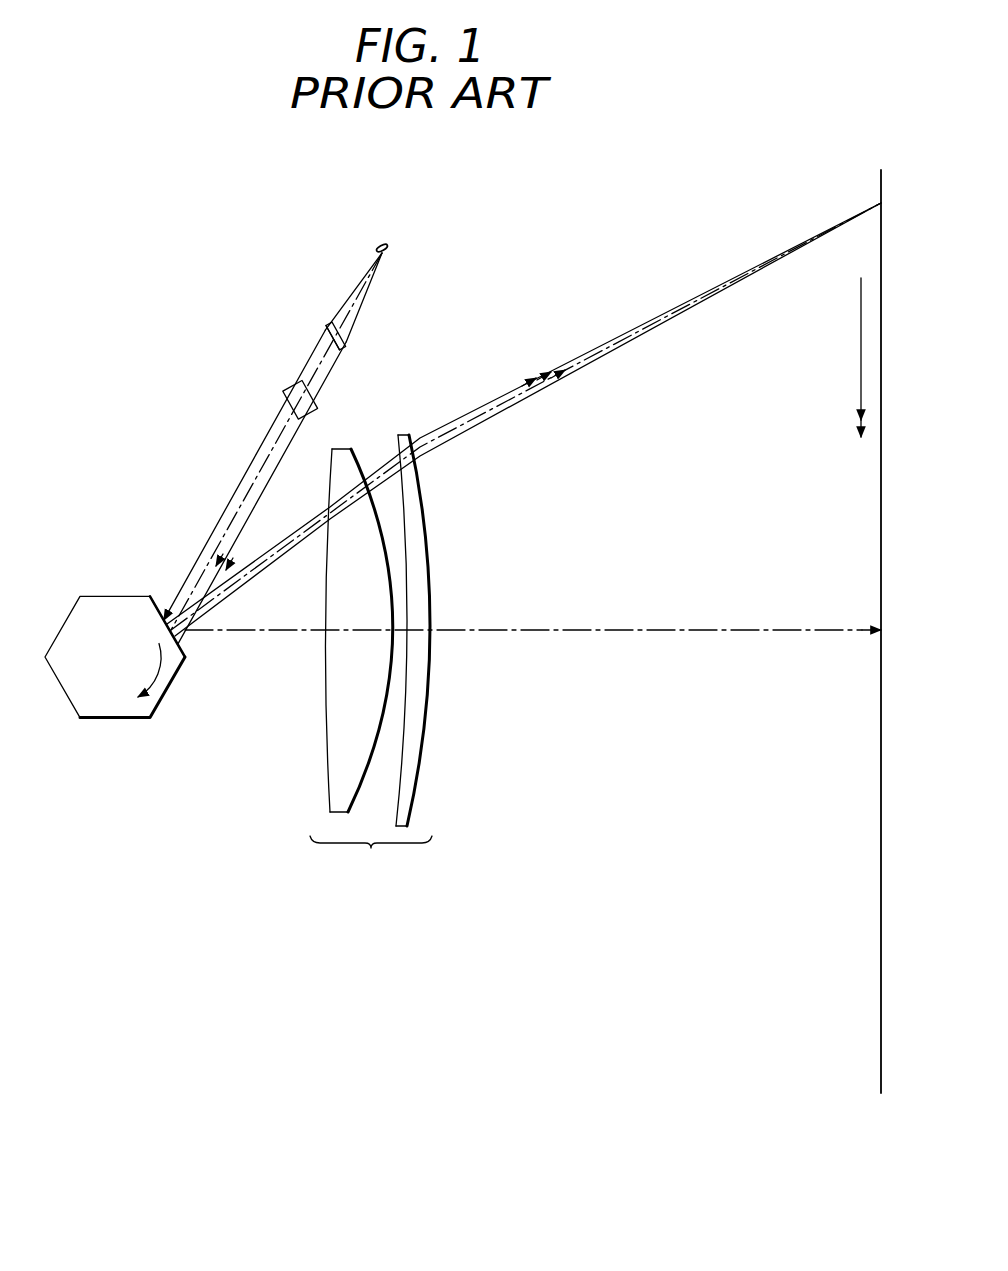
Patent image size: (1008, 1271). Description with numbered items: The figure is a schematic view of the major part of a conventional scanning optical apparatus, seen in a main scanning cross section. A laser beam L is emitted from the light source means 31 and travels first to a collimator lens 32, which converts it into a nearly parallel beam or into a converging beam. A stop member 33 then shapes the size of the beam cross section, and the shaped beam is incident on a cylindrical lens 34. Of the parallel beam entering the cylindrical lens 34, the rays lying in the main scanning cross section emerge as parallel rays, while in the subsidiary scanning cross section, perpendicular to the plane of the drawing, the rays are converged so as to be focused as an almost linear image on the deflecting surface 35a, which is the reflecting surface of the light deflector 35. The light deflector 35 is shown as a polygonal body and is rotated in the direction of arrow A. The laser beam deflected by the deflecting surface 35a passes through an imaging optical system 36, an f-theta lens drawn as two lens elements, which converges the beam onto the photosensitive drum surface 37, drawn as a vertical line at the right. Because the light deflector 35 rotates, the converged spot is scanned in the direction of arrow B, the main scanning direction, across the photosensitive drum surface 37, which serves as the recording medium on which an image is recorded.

The light source means 31 is at (388, 250).
The collimator lens 32 is at (326, 333).
The stop member 33 is at (344, 347).
The cylindrical lens 34 is at (287, 392).
The light deflector 35 is at (108, 597).
The deflecting surface 35a is at (183, 645).
The imaging optical system 36 is at (371, 656).
The photosensitive drum surface 37 is at (881, 250).
The laser beam L is at (362, 303).
The arrow A is at (155, 680).
The arrow B is at (861, 382).